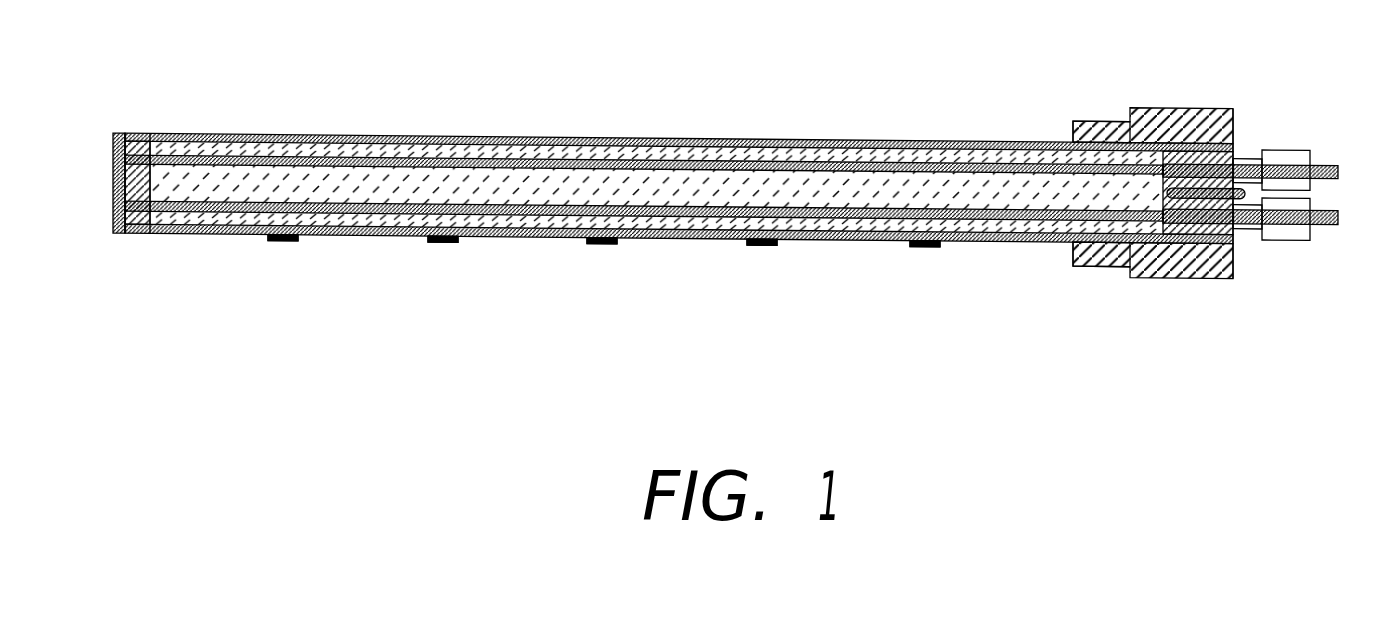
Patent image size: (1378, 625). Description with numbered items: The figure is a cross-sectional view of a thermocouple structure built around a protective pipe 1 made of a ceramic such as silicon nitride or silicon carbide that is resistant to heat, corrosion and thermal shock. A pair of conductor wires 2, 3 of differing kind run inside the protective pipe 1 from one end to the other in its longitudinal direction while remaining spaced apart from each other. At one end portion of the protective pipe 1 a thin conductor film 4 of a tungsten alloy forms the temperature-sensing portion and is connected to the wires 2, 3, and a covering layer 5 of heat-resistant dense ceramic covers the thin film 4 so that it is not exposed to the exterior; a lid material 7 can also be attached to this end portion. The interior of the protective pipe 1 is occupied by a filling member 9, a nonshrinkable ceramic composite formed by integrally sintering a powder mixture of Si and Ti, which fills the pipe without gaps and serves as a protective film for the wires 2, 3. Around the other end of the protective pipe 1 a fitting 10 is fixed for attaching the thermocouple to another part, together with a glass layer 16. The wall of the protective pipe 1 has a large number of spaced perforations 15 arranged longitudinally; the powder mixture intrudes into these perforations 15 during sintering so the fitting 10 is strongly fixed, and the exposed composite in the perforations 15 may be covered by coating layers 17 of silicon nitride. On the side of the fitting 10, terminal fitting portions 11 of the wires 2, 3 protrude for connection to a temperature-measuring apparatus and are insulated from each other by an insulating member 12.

The protective pipe 1 is at (577, 138).
The conductor wire 2 is at (663, 163).
The conductor wire 3 is at (633, 216).
The thin conductor film 4 is at (115, 187).
The covering layer 5 is at (113, 162).
The lid material 7 is at (148, 136).
The filling member 9 is at (375, 185).
The fitting 10 is at (1177, 120).
The terminal fitting portion 11 is at (1327, 163).
The insulating member 12 is at (1210, 280).
The perforation 15 is at (283, 242).
The glass layer 16 is at (1237, 138).
The coating layer 17 is at (287, 242).